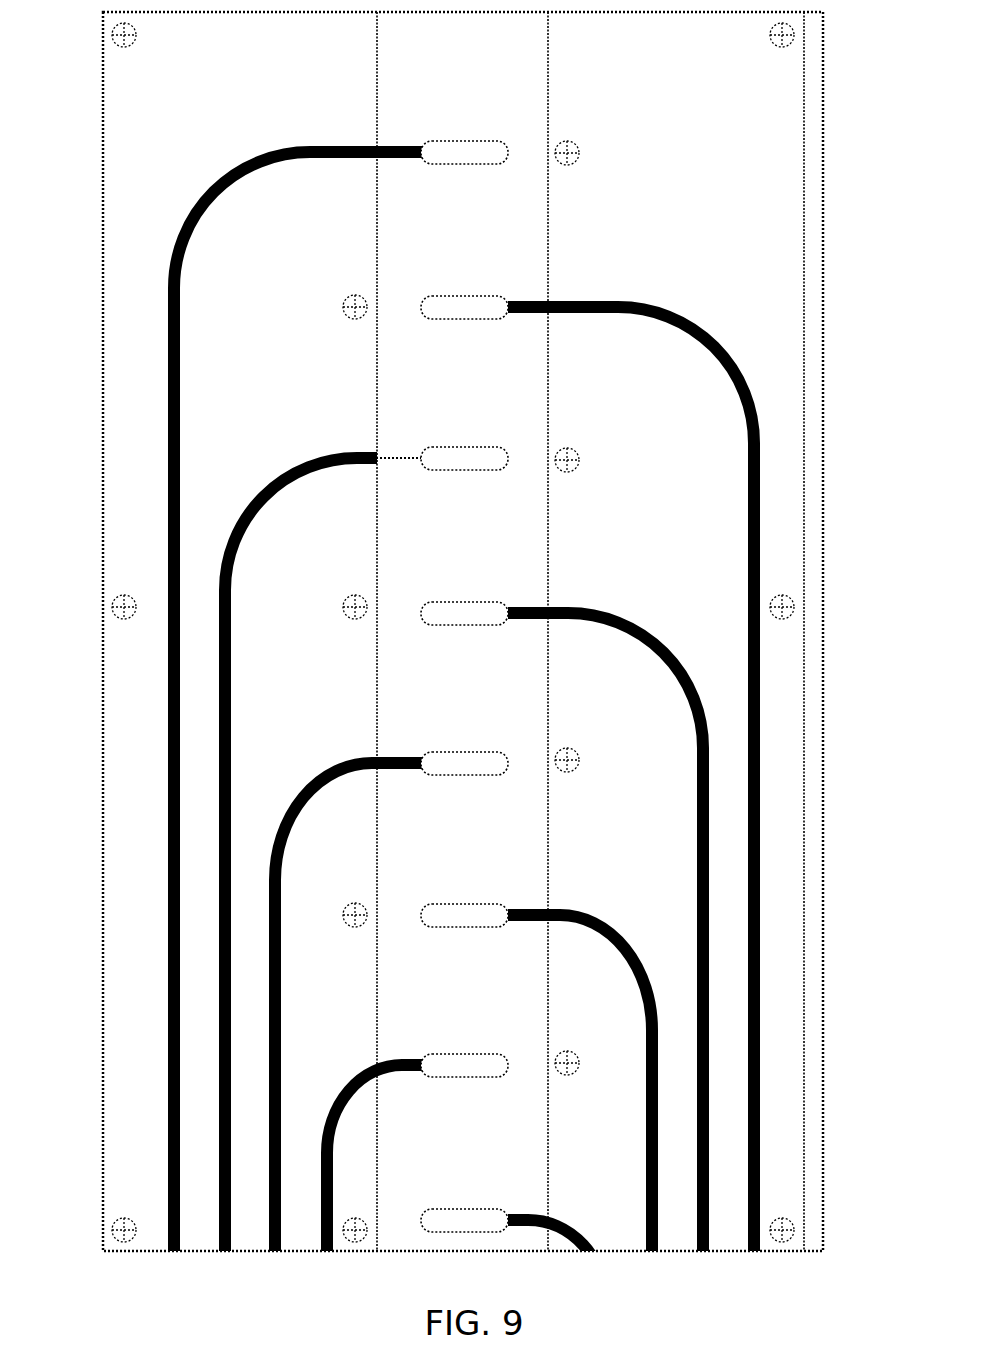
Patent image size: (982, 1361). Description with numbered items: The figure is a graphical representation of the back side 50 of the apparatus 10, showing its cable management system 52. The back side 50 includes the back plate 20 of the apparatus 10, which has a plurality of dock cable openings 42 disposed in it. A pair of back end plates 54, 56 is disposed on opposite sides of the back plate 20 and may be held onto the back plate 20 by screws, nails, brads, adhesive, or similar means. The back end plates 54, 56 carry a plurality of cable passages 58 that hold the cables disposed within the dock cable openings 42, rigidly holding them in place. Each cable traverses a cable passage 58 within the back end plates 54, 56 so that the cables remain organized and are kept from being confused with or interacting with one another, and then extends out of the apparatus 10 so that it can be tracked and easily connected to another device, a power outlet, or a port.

The apparatus 10 is at (88, 268).
The back plate 20 is at (404, 68).
The dock cable openings 42 is at (458, 143).
The back side 50 is at (92, 83).
The cable management system 52 is at (692, 300).
The back end plate 54 is at (176, 68).
The back end plate 56 is at (588, 68).
The cable passages 58 is at (350, 146).